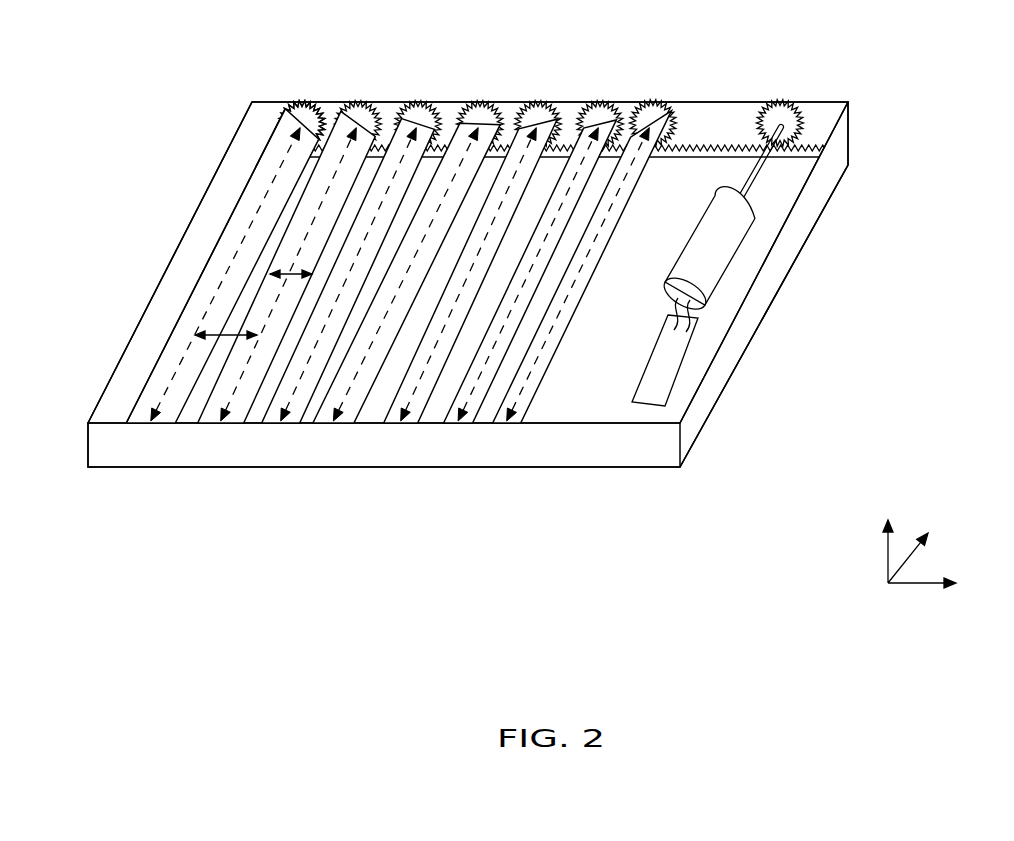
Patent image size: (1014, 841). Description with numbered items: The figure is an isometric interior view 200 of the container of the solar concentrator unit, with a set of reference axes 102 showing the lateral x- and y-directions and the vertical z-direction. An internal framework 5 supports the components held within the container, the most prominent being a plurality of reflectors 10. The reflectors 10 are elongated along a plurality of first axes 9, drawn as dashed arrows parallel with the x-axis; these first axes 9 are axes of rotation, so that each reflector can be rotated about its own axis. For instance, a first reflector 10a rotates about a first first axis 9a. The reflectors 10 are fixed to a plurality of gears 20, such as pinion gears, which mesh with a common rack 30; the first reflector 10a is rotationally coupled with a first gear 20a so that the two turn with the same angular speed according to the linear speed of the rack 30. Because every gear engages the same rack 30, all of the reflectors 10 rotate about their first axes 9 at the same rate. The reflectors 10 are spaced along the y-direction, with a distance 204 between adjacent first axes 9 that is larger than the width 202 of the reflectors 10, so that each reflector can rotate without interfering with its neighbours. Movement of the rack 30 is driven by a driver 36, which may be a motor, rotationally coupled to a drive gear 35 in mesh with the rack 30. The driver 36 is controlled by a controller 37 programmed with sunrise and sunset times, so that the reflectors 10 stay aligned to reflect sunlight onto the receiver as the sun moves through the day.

The interior view 200 is at (174, 67).
The internal framework 5 is at (528, 460).
The reflectors 10 is at (150, 364).
The first reflector 10a is at (263, 168).
The first axes 9 is at (398, 266).
The first first axis 9a is at (232, 215).
The gears 20 is at (362, 101).
The first gear 20a is at (298, 101).
The rack 30 is at (690, 147).
The drive gear 35 is at (795, 105).
The driver 36 is at (737, 250).
The controller 37 is at (673, 383).
The width 202 is at (273, 273).
The distance 204 is at (195, 335).
The reference axes 102 is at (936, 513).